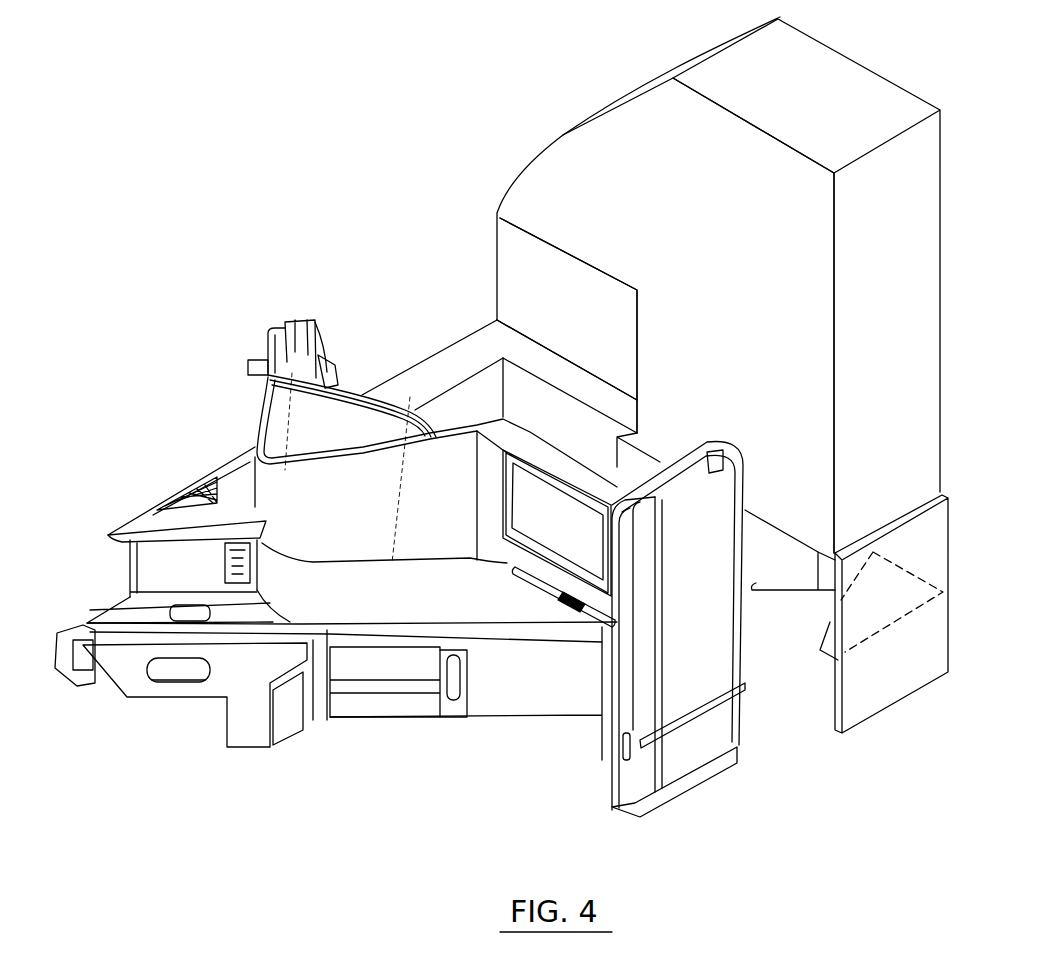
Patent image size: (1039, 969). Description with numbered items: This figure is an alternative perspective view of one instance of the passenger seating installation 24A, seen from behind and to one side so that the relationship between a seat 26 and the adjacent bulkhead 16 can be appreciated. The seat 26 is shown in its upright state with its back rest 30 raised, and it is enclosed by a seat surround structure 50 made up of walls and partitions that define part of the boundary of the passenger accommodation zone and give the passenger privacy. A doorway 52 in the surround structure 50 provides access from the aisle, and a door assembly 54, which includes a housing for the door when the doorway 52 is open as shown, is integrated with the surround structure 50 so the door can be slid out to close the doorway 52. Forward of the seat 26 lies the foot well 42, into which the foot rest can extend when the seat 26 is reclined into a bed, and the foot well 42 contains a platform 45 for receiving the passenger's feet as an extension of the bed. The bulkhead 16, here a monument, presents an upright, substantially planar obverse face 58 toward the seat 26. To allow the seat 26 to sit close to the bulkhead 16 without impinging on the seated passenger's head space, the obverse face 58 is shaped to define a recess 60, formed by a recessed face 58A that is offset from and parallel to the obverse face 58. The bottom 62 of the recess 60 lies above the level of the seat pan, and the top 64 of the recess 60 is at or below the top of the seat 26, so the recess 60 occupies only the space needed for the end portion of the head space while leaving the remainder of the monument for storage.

The passenger seating installation 24A is at (333, 122).
The bulkhead 16 is at (942, 212).
The obverse face 58 is at (735, 220).
The recessed face 58A is at (610, 320).
The top of the recess 64 is at (497, 213).
The recess 60 is at (517, 263).
The bottom of the recess 62 is at (510, 343).
The seat 26 is at (290, 322).
The back rest 30 is at (313, 317).
The seat surround structure 50 is at (286, 418).
The door assembly 54 is at (627, 786).
The doorway 52 is at (767, 752).
The foot well 42 is at (823, 617).
The platform 45 is at (905, 615).